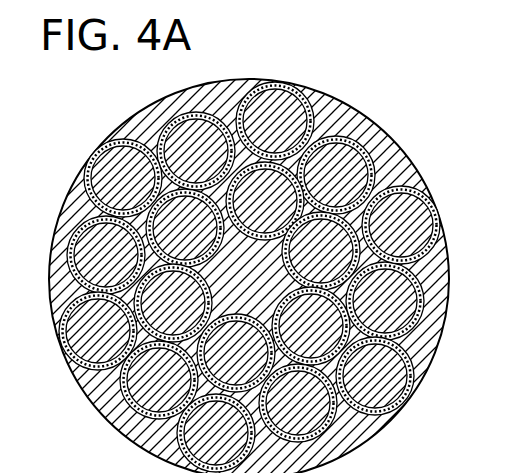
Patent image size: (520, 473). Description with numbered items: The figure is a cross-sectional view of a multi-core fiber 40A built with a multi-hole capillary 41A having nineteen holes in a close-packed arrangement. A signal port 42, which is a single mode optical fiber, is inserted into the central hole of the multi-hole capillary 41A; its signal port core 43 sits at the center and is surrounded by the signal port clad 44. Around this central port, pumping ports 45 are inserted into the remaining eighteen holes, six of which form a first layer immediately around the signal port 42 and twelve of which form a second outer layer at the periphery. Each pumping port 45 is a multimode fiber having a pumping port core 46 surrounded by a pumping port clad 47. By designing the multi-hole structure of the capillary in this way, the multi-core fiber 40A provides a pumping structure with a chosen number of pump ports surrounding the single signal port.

The multi-core fiber 40A is at (280, 248).
The multi-hole capillary 41A is at (427, 256).
The signal port 42 is at (255, 312).
The signal port core 43 is at (268, 284).
The signal port clad 44 is at (408, 370).
The pumping port 45 is at (405, 168).
The pumping port core 46 is at (420, 193).
The pumping port clad 47 is at (433, 222).